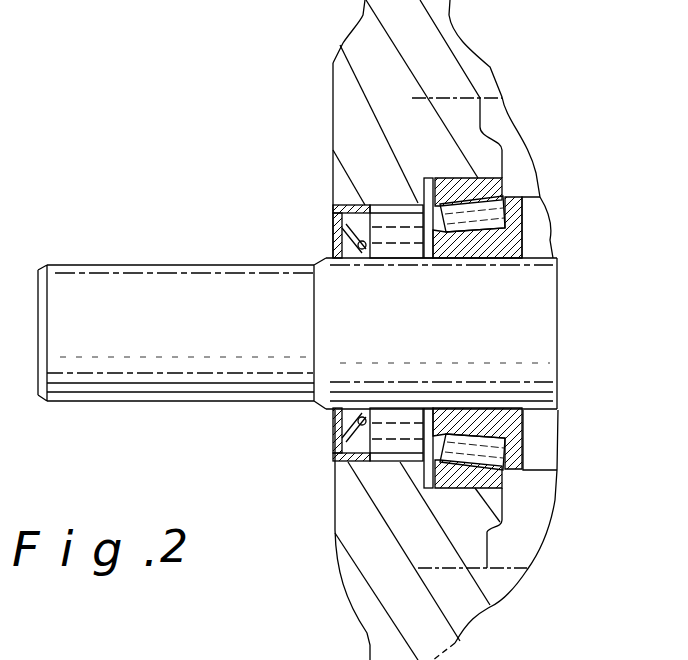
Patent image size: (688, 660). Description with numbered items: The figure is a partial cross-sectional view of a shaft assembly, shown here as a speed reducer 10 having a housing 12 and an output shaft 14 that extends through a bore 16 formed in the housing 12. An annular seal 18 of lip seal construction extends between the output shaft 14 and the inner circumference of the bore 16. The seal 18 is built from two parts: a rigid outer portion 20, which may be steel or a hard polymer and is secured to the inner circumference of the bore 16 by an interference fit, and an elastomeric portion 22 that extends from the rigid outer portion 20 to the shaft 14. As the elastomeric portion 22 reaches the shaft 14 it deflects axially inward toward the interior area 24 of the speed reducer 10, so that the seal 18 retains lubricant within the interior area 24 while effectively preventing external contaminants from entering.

The speed reducer 10 is at (252, 122).
The housing 12 is at (343, 45).
The output shaft 14 is at (170, 265).
The bore 16 is at (391, 222).
The annular seal 18 is at (303, 229).
The rigid outer portion 20 is at (334, 210).
The elastomeric portion 22 is at (343, 257).
The interior area 24 is at (412, 246).